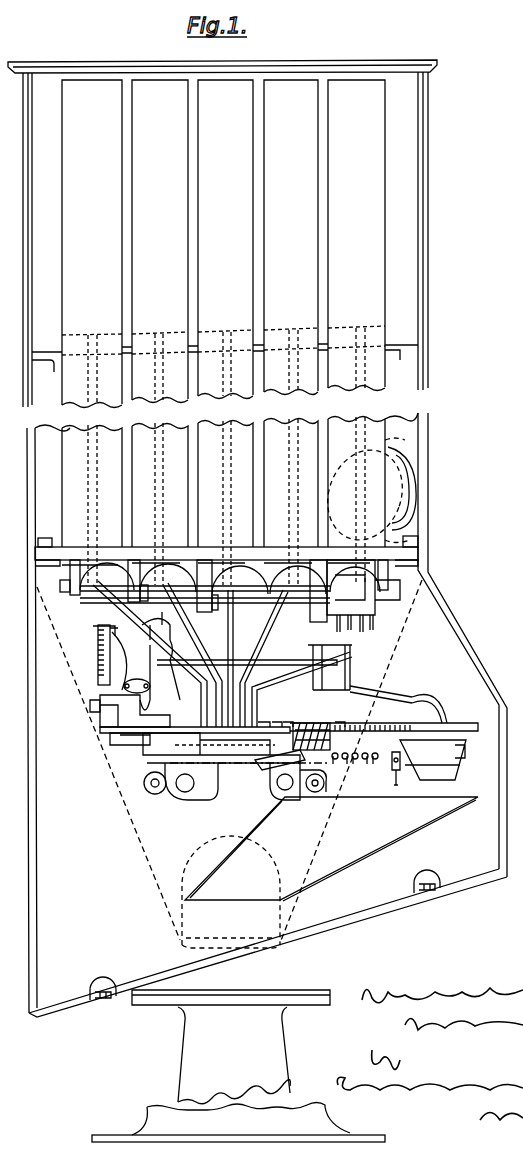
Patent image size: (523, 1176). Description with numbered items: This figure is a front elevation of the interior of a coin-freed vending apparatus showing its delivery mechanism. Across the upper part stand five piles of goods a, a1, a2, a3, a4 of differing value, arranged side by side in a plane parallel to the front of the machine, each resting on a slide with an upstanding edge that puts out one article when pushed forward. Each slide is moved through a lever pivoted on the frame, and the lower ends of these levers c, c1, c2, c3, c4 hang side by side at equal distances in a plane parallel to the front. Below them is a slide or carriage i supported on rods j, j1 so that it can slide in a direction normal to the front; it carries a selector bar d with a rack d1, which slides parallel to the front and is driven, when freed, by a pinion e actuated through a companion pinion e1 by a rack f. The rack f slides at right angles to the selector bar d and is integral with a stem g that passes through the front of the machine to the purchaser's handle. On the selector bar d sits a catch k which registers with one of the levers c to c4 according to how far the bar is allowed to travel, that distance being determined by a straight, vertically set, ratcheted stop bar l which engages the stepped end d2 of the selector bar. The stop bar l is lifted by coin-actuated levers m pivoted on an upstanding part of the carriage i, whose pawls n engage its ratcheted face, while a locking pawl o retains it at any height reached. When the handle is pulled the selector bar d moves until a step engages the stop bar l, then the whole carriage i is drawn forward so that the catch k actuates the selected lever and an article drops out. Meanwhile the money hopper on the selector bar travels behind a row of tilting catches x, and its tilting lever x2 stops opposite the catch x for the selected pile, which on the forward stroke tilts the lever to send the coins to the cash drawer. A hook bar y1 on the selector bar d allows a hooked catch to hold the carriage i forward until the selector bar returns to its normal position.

The pile of goods a is at (92, 332).
The pile of goods a1 is at (160, 332).
The pile of goods a2 is at (225, 332).
The pile of goods a3 is at (291, 332).
The pile of goods a4 is at (356, 332).
The slide lever c is at (118, 603).
The slide lever c1 is at (190, 633).
The slide lever c2 is at (234, 624).
The slide lever c3 is at (270, 631).
The slide lever c4 is at (273, 680).
The coin-actuated lever m is at (217, 661).
The pawl n is at (115, 639).
The locking pawl o is at (98, 655).
The stop bar l is at (100, 716).
The selector bar d is at (255, 745).
The rack d1 is at (430, 698).
The stepped end d2 is at (145, 720).
The catch k is at (270, 722).
The pinion e is at (322, 733).
The companion pinion e1 is at (335, 732).
The stem g is at (448, 748).
The carriage i is at (218, 764).
The rod j is at (185, 792).
The rod j1 is at (290, 793).
The hook bar y1 is at (262, 780).
The rack f is at (268, 762).
The tilting catch x is at (348, 762).
The tilting lever x2 is at (392, 768).